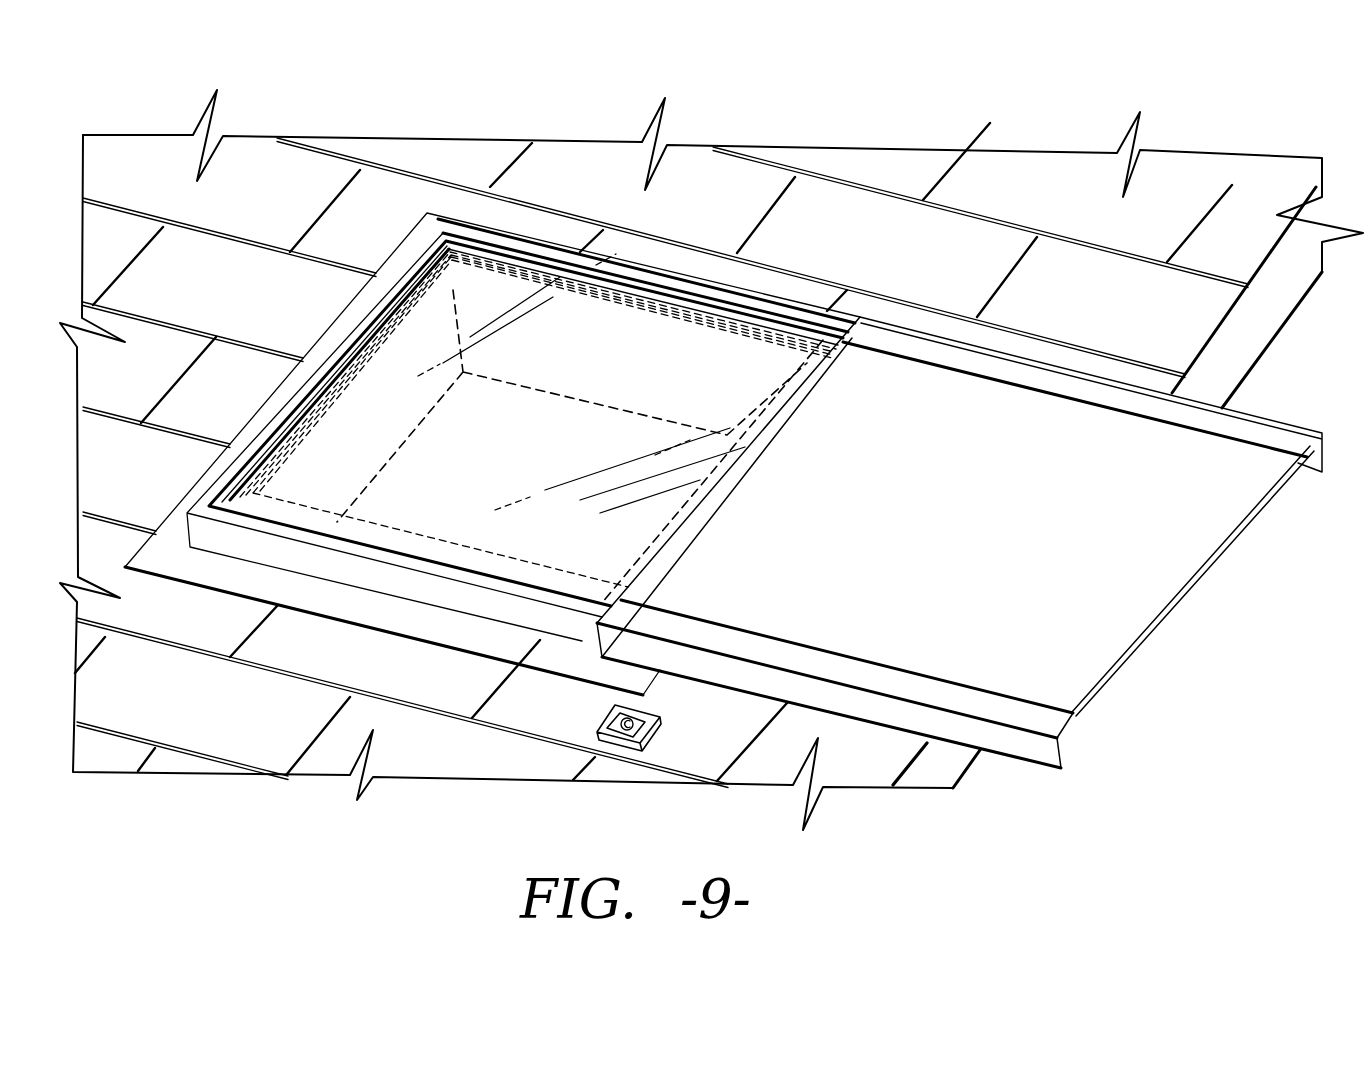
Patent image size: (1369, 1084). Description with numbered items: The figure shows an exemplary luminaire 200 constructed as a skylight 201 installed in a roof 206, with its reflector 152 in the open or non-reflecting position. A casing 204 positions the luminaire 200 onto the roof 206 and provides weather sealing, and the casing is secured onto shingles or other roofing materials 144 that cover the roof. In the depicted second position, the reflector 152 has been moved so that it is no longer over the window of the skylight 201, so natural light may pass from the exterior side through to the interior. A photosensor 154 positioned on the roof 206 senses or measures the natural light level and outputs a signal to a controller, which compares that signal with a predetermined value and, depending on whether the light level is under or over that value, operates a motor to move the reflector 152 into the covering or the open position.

The roof 206 is at (377, 216).
The skylight 201 is at (542, 339).
The luminaire 200 is at (753, 289).
The roofing materials 144 is at (1185, 325).
The reflector 152 is at (1248, 427).
The casing 204 is at (353, 598).
The photosensor 154 is at (603, 720).